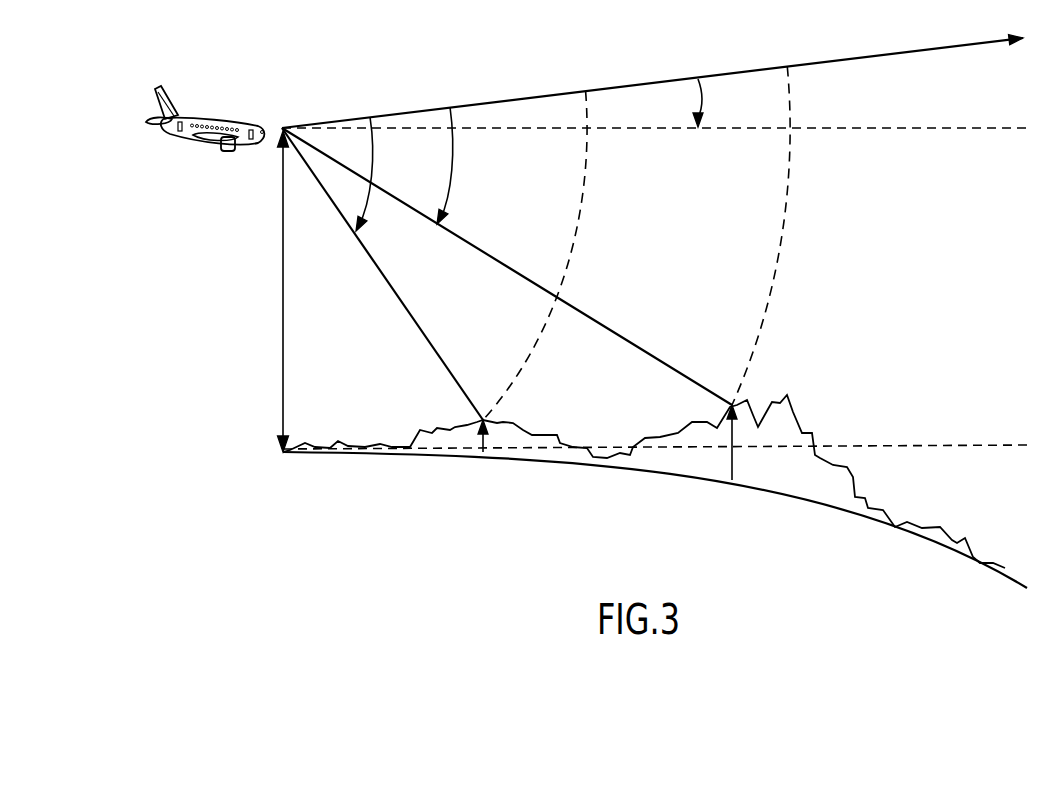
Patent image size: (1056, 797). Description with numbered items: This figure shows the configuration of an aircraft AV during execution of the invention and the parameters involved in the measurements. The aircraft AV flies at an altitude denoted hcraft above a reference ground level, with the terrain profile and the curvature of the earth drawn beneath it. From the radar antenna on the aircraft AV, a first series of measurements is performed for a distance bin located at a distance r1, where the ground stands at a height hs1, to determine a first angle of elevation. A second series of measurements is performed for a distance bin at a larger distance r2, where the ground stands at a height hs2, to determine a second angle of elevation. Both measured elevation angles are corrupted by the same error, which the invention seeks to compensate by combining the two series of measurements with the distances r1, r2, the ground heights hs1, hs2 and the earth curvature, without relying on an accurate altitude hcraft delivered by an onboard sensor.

The aircraft AV is at (238, 124).
The altitude of the aircraft hcraft is at (315, 291).
The first distance r1 is at (382, 274).
The second distance r2 is at (507, 266).
The height of the ground at first distance hs1 is at (502, 438).
The height of the ground at second distance hs2 is at (750, 444).